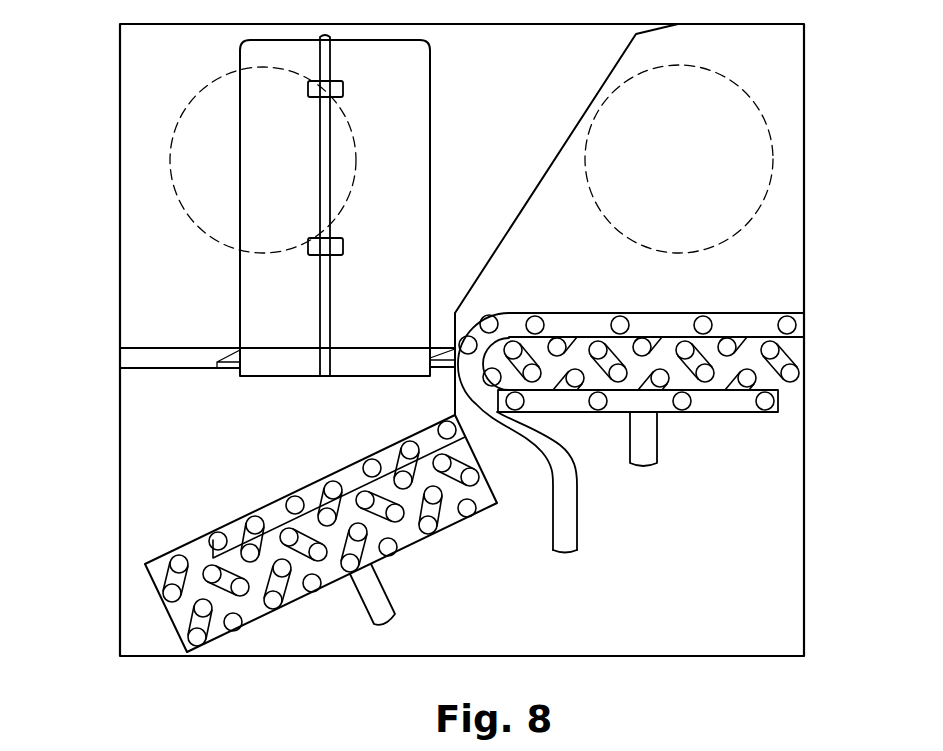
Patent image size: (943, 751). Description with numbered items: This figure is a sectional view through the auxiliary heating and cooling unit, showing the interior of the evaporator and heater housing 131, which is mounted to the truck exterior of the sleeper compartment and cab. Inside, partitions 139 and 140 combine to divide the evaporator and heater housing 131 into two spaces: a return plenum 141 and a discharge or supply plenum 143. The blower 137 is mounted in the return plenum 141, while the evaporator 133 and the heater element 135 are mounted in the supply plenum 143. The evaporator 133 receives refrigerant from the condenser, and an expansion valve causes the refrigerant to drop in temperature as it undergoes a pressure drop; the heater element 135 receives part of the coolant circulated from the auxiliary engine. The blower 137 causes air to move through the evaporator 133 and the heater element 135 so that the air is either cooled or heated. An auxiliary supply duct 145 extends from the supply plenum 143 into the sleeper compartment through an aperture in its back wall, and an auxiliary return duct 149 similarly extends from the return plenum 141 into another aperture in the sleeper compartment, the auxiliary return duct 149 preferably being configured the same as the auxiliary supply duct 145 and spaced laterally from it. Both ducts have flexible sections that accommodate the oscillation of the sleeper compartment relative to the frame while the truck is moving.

The evaporator and heater housing 131 is at (804, 70).
The evaporator 133 is at (193, 543).
The heater element 135 is at (752, 313).
The blower 137 is at (430, 75).
The partition 139 is at (552, 157).
The partition 140 is at (143, 348).
The return plenum 141 is at (198, 312).
The supply plenum 143 is at (732, 578).
The auxiliary supply duct 145 is at (770, 136).
The auxiliary return duct 149 is at (175, 169).